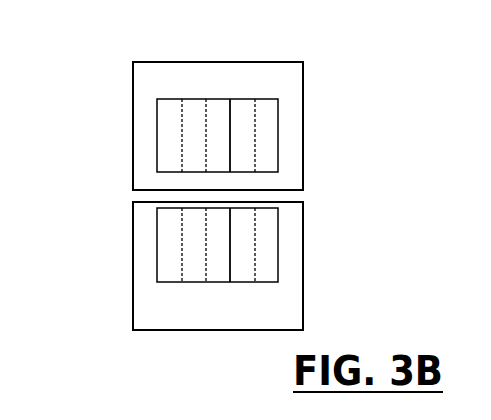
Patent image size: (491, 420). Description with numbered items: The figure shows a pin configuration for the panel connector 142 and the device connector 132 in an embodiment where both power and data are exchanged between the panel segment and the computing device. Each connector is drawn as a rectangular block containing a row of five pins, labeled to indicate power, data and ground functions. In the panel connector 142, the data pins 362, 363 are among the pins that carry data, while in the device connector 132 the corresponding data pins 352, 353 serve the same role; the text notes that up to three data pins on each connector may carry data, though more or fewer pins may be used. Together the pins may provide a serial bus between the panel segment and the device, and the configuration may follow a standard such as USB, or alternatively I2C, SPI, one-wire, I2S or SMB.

The panel connector 142 is at (133, 110).
The device connector 132 is at (133, 233).
The data pin 362 is at (192, 98).
The data pin 363 is at (217, 98).
The data pin 352 is at (193, 282).
The data pin 353 is at (213, 282).